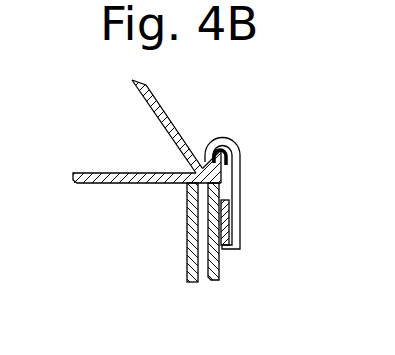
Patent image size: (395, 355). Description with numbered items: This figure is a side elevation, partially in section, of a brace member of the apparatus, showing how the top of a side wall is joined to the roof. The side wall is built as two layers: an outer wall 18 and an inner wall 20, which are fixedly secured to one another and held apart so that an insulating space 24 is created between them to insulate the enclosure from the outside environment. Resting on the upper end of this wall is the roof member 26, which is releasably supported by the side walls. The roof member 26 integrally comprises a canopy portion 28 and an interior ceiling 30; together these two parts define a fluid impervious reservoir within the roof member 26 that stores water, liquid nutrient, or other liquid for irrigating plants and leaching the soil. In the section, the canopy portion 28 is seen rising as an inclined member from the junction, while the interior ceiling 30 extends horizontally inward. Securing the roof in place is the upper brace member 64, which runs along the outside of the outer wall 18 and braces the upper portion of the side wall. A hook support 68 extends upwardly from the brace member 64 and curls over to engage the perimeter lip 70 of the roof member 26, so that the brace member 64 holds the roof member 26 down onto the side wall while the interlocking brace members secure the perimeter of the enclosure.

The outer wall 18 is at (221, 276).
The inner wall 20 is at (187, 257).
The insulating space 24 is at (203, 208).
The roof member 26 is at (158, 98).
The canopy portion 28 is at (155, 116).
The interior ceiling 30 is at (108, 173).
The upper brace member 64 is at (232, 247).
The hook support 68 is at (241, 192).
The perimeter lip 70 is at (236, 149).